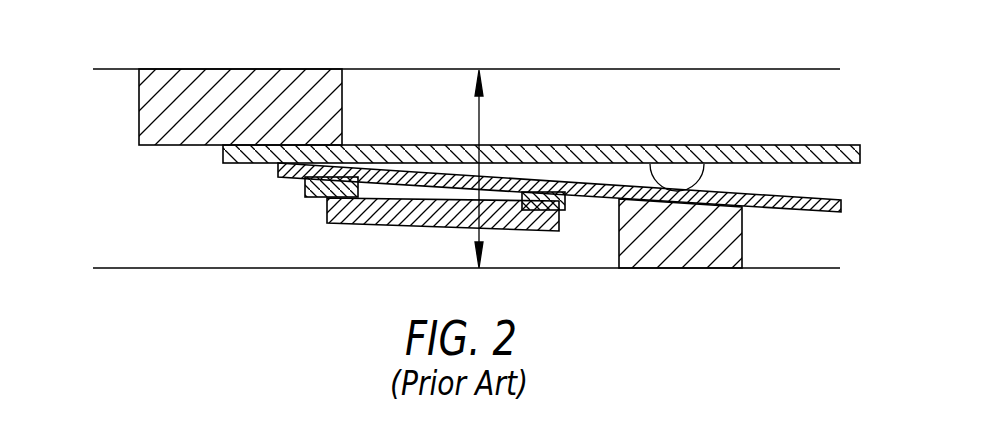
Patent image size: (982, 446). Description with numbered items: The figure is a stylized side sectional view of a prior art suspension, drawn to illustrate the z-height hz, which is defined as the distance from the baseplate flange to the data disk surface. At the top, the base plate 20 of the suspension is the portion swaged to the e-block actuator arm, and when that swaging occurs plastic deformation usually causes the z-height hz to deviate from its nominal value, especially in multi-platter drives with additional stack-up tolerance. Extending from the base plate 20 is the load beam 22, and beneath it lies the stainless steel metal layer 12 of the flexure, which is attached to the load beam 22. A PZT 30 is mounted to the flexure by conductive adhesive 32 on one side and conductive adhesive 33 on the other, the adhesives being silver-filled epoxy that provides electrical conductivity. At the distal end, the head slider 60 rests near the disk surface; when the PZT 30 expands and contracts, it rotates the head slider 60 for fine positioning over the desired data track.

The metal layer 12 is at (841, 206).
The base plate 20 is at (276, 69).
The load beam 22 is at (666, 145).
The PZT 30 is at (400, 232).
The conductive adhesive 32 is at (305, 186).
The conductive adhesive 33 is at (565, 201).
The head slider 60 is at (683, 269).
The z-height hz is at (490, 169).